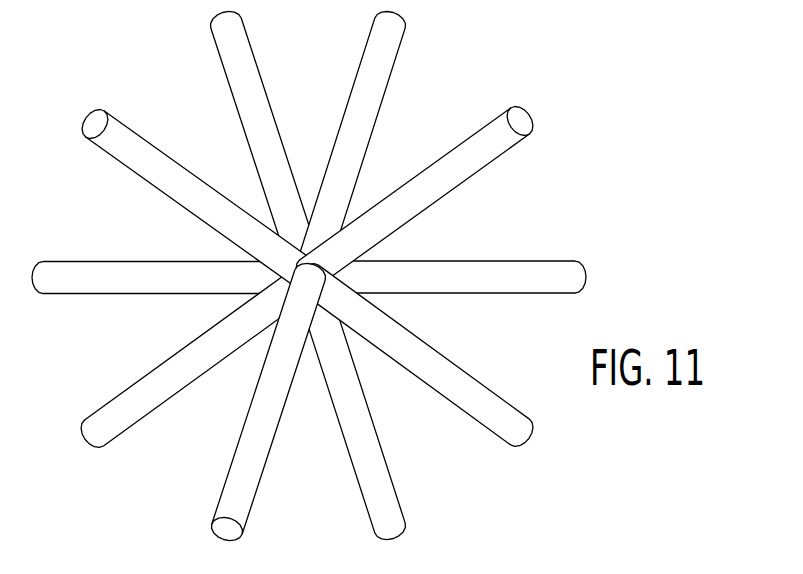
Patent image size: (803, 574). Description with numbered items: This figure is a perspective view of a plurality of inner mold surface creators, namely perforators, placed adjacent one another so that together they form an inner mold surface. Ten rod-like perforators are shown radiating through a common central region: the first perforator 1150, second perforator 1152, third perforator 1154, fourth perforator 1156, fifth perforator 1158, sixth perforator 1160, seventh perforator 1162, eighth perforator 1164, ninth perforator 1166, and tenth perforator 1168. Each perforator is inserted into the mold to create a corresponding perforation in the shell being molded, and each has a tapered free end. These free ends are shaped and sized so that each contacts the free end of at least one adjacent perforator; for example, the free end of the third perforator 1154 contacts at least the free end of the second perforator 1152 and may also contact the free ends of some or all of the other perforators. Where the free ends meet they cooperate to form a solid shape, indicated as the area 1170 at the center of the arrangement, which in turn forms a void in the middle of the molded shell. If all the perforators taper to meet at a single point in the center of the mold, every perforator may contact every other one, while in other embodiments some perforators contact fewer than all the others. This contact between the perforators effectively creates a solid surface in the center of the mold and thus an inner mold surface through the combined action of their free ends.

The first perforator 1150 is at (134, 129).
The second perforator 1152 is at (254, 499).
The third perforator 1154 is at (448, 153).
The fourth perforator 1156 is at (251, 46).
The fifth perforator 1158 is at (81, 262).
The sixth perforator 1160 is at (141, 421).
The seventh perforator 1162 is at (394, 482).
The eighth perforator 1164 is at (495, 355).
The ninth perforator 1166 is at (510, 260).
The tenth perforator 1168 is at (396, 58).
The area where perforator free ends meet 1170 is at (236, 299).